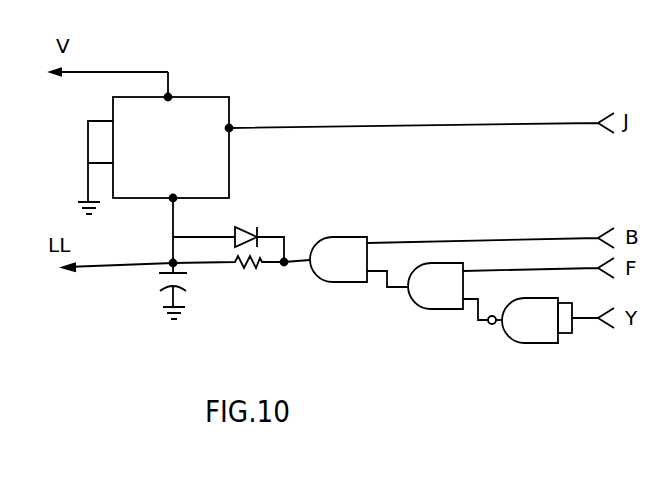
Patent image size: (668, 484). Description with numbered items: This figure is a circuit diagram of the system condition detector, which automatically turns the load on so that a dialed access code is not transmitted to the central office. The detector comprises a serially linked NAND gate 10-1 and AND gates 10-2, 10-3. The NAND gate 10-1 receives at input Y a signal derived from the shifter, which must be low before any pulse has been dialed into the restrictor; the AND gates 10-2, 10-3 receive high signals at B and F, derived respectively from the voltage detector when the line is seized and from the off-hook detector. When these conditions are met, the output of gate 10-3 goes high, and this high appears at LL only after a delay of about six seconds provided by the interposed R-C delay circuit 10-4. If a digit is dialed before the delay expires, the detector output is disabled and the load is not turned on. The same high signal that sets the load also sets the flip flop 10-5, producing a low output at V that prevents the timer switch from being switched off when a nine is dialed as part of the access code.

The flip flop 10-5 is at (213, 105).
The R-C delay circuit 10-4 is at (198, 276).
The AND gate 10-3 is at (351, 245).
The AND gate 10-2 is at (472, 262).
The NAND gate 10-1 is at (543, 310).